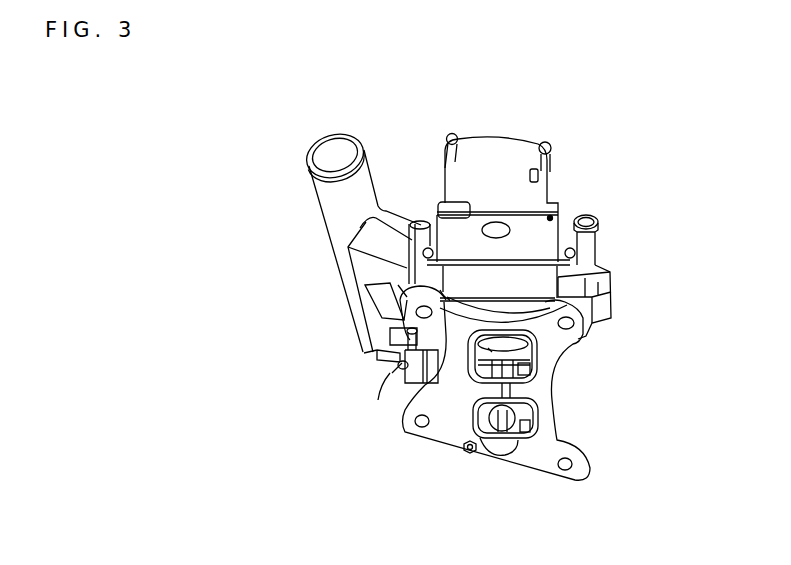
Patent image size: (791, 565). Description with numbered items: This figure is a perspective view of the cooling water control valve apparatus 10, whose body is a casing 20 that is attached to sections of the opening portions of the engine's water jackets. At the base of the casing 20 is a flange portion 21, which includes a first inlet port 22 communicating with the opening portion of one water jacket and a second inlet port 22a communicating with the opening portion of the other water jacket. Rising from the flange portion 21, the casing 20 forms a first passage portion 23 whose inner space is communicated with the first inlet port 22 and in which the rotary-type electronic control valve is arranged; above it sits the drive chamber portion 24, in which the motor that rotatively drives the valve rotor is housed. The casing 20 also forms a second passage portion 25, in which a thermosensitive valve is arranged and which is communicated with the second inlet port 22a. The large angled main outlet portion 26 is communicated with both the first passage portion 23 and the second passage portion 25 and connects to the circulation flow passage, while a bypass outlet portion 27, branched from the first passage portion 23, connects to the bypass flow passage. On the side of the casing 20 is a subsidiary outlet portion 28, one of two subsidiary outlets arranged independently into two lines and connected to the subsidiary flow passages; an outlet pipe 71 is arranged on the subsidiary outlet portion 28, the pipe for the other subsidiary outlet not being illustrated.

The cooling water control valve apparatus 10 is at (621, 252).
The casing 20 is at (365, 285).
The flange portion 21 is at (558, 452).
The first inlet port 22 is at (540, 386).
The second inlet port 22a is at (530, 455).
The first passage portion 23 is at (490, 350).
The drive chamber portion 24 is at (498, 158).
The second passage portion 25 is at (474, 452).
The main outlet portion 26 is at (343, 200).
The bypass outlet portion 27 is at (398, 366).
The subsidiary outlet portion 28 is at (598, 306).
The outlet pipe 71 is at (589, 212).